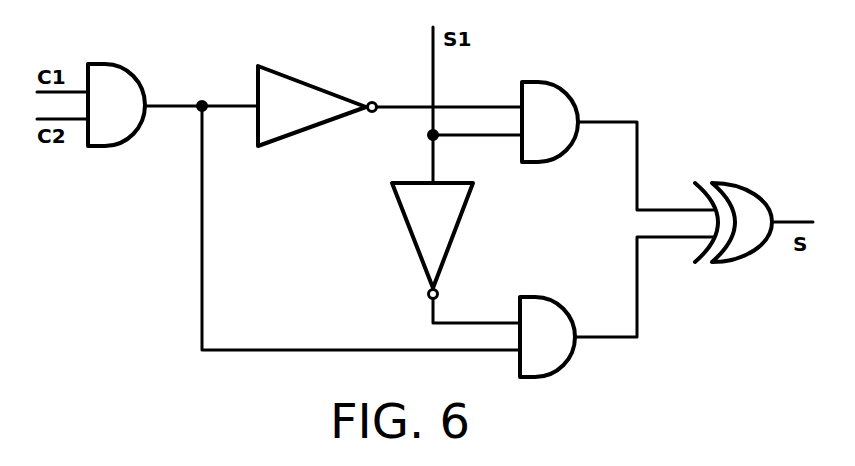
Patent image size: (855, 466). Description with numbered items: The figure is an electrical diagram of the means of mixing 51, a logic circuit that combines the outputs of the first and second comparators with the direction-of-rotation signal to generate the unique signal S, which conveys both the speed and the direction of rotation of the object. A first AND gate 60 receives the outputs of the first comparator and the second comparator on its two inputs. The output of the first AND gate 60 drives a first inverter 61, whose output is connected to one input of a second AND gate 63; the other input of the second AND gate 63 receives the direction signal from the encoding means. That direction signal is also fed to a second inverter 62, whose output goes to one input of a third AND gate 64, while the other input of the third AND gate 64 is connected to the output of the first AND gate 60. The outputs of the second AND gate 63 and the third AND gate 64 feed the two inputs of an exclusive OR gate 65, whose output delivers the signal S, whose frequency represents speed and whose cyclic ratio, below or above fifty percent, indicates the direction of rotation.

The means of mixing 51 is at (686, 65).
The first AND gate 60 is at (112, 127).
The first inverter 61 is at (310, 119).
The second inverter 62 is at (410, 209).
The second AND gate 63 is at (560, 112).
The third AND gate 64 is at (545, 316).
The exclusive OR gate 65 is at (747, 195).